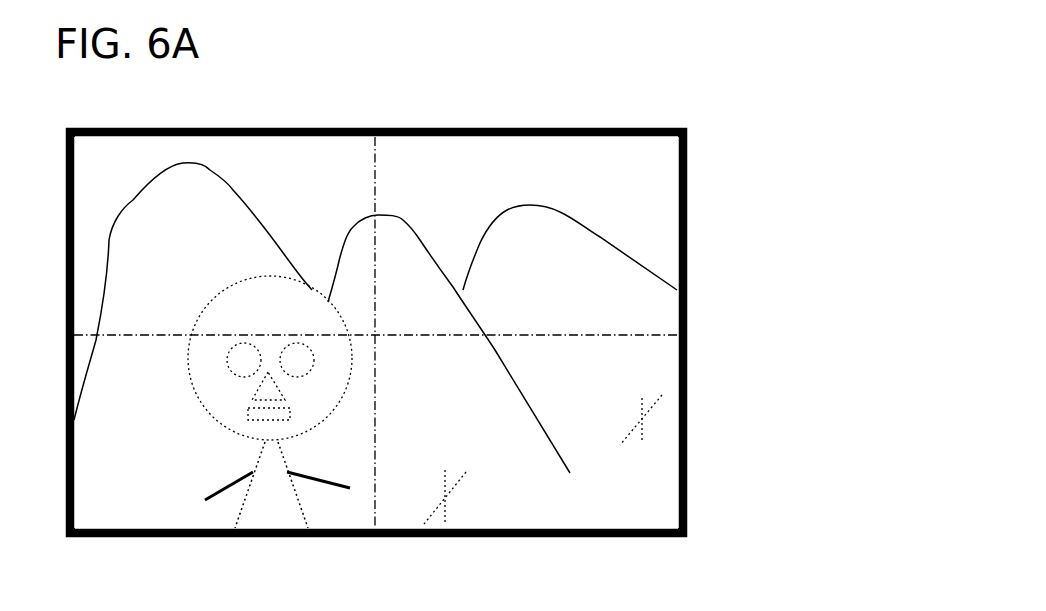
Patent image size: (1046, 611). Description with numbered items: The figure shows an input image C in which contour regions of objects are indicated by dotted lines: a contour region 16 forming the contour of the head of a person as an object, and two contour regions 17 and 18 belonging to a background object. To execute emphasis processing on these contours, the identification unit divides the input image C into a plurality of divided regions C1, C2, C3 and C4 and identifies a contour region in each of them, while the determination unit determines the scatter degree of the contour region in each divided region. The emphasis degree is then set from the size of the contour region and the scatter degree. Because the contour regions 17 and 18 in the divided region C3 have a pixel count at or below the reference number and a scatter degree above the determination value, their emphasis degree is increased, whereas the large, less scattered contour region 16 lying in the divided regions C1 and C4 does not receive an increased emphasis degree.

The contour region 16 is at (318, 290).
The contour region 17 is at (445, 470).
The contour region 18 is at (642, 398).
The input image C is at (688, 468).
The divided region C1 is at (110, 143).
The divided region C2 is at (651, 143).
The divided region C3 is at (660, 522).
The divided region C4 is at (107, 523).